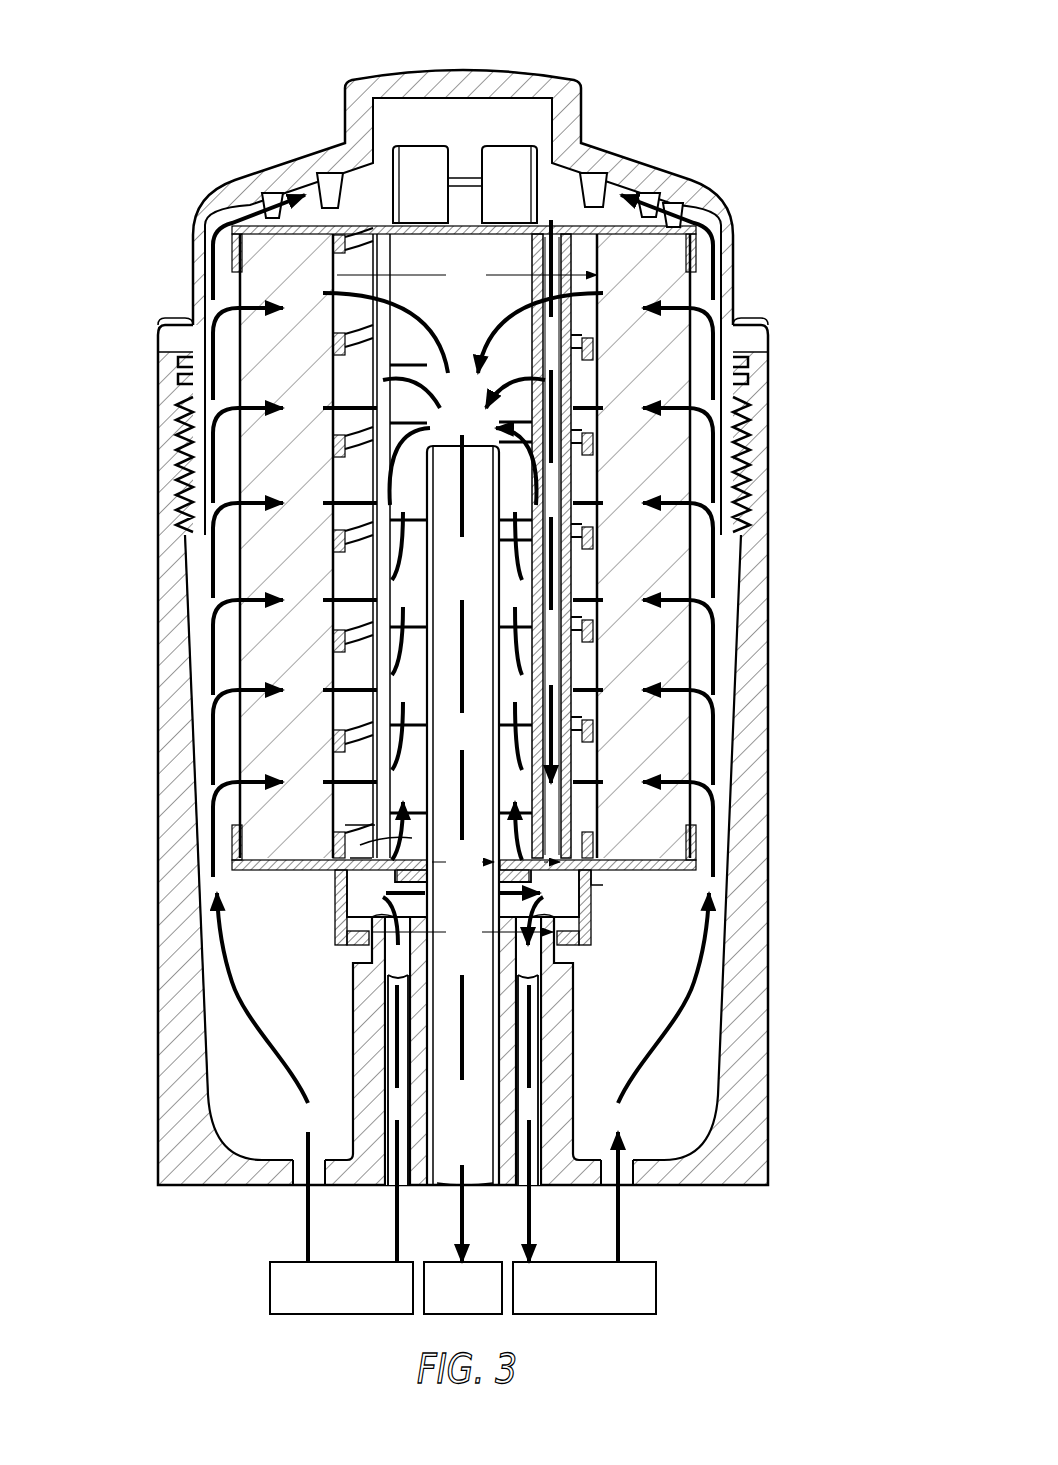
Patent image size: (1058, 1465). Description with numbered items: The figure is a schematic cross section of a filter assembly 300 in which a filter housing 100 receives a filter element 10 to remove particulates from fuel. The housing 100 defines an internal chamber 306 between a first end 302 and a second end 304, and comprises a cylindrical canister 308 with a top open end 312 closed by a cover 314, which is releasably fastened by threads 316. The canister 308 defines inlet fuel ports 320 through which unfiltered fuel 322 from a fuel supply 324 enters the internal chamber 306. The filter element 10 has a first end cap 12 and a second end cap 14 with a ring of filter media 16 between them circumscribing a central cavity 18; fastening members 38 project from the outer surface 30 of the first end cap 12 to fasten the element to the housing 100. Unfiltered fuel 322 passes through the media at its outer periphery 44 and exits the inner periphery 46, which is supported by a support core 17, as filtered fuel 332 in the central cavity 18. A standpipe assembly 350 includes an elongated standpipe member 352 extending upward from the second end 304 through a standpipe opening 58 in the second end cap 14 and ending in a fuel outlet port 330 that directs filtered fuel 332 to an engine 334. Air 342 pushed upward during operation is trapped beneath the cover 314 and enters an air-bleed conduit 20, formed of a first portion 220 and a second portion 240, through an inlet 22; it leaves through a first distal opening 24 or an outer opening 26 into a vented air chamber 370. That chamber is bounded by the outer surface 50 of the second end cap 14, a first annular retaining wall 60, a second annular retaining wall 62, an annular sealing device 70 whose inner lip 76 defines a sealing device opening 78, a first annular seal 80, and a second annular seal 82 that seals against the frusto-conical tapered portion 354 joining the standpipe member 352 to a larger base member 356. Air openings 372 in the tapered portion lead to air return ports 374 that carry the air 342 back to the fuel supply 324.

The filter assembly 300 is at (120, 68).
The first end 302 is at (528, 68).
The second end 304 is at (722, 1187).
The internal chamber 306 is at (222, 303).
The cylindrical canister 308 is at (769, 537).
The open end 312 is at (763, 340).
The cover 314 is at (714, 196).
The threads 316 is at (758, 458).
The inlet fuel ports 320 is at (300, 1176).
The unfiltered fuel 322 is at (302, 1080).
The fuel supply 324 is at (589, 1304).
The fuel outlet port 330 is at (472, 446).
The filtered fuel 332 is at (498, 305).
The engine 334 is at (452, 1304).
The air 342 is at (226, 218).
The standpipe assembly 350 is at (372, 834).
The elongated standpipe member 352 is at (385, 815).
The frusto-conical tapered portion 354 is at (572, 955).
The base member 356 is at (574, 1003).
The vented air chamber 370 is at (357, 920).
The air openings 372 is at (418, 913).
The air return ports 374 is at (526, 1100).
The filter element 10 is at (609, 195).
The first end cap 12 is at (353, 182).
The second end cap 14 is at (668, 912).
The filter media 16 is at (258, 616).
The support core 17 is at (409, 332).
The central cavity 18 is at (467, 273).
The air-bleed conduit 20 is at (472, 546).
The inlet 22 is at (553, 217).
The first distal opening 24 is at (575, 905).
The outer opening 26 is at (555, 866).
The outer surface 30 is at (315, 220).
The fastening members 38 is at (499, 148).
The outer periphery 44 is at (188, 542).
The inner periphery 46 is at (340, 620).
The outer surface 50 is at (275, 870).
The standpipe opening 58 is at (463, 860).
The first annular retaining wall 60 is at (358, 898).
The second annular retaining wall 62 is at (598, 882).
The annular sealing device 70 is at (580, 932).
The inner lip 76 is at (347, 938).
The sealing device opening 78 is at (463, 930).
The first annular seal 80 is at (413, 860).
The second annular seal 82 is at (358, 948).
The filter housing 100 is at (210, 143).
The first portion 220 is at (555, 582).
The second portion 240 is at (598, 742).